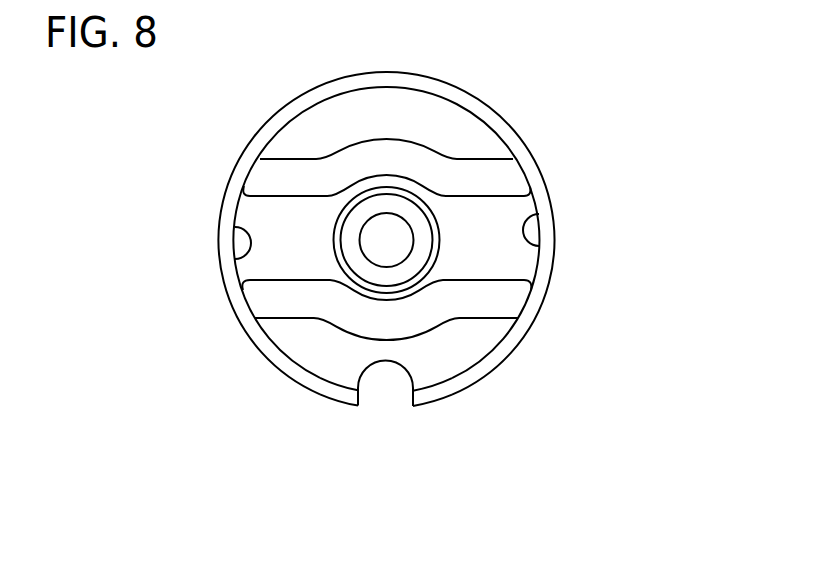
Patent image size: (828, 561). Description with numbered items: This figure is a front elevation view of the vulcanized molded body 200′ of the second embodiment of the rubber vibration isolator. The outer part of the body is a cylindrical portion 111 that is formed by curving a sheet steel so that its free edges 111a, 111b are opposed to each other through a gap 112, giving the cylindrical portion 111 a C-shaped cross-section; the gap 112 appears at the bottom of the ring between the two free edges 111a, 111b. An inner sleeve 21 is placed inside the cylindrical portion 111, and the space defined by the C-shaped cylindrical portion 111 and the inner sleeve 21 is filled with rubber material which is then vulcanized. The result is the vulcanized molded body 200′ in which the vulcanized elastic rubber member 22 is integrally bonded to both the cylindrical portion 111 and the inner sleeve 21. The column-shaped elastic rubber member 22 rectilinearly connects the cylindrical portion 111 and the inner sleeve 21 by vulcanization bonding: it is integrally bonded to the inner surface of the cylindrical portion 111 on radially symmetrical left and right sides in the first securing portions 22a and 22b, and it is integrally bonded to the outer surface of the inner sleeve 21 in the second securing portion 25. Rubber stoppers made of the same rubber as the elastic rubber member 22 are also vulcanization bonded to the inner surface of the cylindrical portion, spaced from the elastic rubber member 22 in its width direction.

The cylindrical portion 111 is at (463, 103).
The free edge 111a is at (352, 392).
The free edge 111b is at (425, 395).
The gap 112 is at (385, 388).
The elastic rubber member 22 is at (497, 213).
The first securing portion 22a is at (237, 227).
The first securing portion 22b is at (530, 215).
The inner sleeve 21 is at (408, 266).
The second securing portion 25 is at (410, 268).
The vulcanized molded body 200′ is at (236, 353).